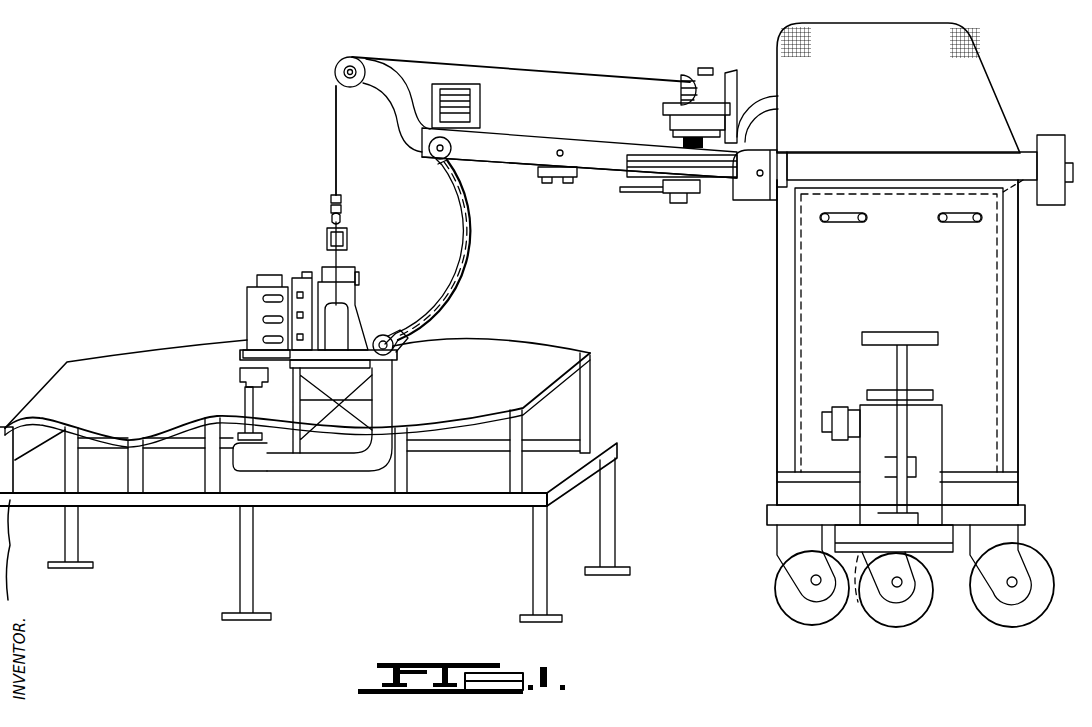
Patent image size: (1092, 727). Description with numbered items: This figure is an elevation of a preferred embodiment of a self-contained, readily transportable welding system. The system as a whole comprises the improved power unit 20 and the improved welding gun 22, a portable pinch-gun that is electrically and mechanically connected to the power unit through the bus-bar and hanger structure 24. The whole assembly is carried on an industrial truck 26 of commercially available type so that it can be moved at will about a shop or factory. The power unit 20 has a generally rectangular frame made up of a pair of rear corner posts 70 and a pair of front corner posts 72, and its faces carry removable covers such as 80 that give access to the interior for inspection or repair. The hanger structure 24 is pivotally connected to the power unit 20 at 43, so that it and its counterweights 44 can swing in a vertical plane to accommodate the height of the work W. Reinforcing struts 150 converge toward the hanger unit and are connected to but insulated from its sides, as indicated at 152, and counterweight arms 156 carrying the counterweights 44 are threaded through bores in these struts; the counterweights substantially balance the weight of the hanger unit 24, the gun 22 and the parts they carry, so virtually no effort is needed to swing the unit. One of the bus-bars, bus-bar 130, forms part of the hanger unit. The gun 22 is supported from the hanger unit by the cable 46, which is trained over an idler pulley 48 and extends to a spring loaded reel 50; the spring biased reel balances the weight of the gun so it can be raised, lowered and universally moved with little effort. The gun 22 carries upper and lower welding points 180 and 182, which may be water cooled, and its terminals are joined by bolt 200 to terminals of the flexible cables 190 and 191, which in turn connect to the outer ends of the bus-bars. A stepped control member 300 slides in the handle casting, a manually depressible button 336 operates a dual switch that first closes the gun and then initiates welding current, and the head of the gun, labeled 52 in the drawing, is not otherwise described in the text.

The power unit 20 is at (967, 325).
The welding gun 22 is at (245, 320).
The bus-bar and hanger structure 24 is at (500, 130).
The industrial truck 26 is at (1030, 513).
The pivotal connection 43 is at (760, 176).
The counterweights 44 is at (1060, 118).
The cable 46 is at (337, 157).
The idler pulley 48 is at (363, 62).
The spring loaded reel 50 is at (698, 78).
The press head 52 is at (357, 273).
The rear corner posts 70 is at (1020, 382).
The front corner posts 72 is at (777, 383).
The removable covers 80 is at (905, 291).
The bus-bar 130 is at (500, 158).
The reinforcing struts 150 is at (603, 167).
The insulated connection 152 is at (563, 150).
The counterweight arms 156 is at (857, 167).
The upper welding point 180 is at (260, 405).
The lower welding point 182 is at (243, 430).
The cable 190 is at (462, 268).
The cable 191 is at (472, 245).
The bolt 200 is at (387, 335).
The control member 300 is at (303, 272).
The manually depressible button 336 is at (359, 283).
The work W is at (520, 353).